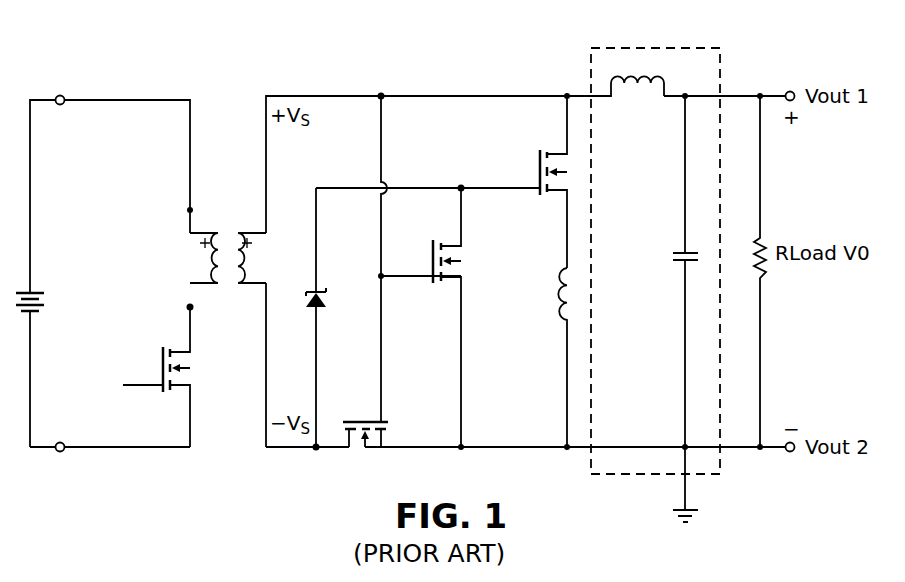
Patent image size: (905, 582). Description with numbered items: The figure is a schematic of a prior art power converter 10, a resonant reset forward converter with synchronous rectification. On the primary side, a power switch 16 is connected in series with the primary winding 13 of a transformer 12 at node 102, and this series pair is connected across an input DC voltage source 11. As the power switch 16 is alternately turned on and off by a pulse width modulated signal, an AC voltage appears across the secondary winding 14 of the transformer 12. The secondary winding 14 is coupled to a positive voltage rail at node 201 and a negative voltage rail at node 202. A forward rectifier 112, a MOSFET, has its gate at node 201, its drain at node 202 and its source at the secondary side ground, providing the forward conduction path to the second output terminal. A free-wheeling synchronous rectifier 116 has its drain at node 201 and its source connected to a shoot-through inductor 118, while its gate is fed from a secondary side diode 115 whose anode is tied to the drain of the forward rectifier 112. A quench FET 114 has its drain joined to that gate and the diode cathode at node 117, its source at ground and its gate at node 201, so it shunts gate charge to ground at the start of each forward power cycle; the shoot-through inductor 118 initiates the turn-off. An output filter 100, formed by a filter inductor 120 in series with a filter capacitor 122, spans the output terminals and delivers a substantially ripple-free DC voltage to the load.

The power converter 10 is at (561, 56).
The input DC voltage source 11 is at (37, 291).
The transformer 12 is at (229, 224).
The primary winding 13 is at (213, 263).
The secondary winding 14 is at (243, 262).
The power switch 16 is at (160, 367).
The output filter 100 is at (648, 476).
The node 102 is at (182, 313).
The forward rectifier 112 is at (365, 420).
The quench FET 114 is at (432, 262).
The secondary side diode 115 is at (320, 292).
The free-wheeling synchronous rectifier 116 is at (538, 171).
The node 117 is at (461, 186).
The shoot-through inductor 118 is at (556, 292).
The filter inductor 120 is at (645, 82).
The filter capacitor 122 is at (680, 252).
The node 201 is at (381, 93).
The node 202 is at (315, 450).